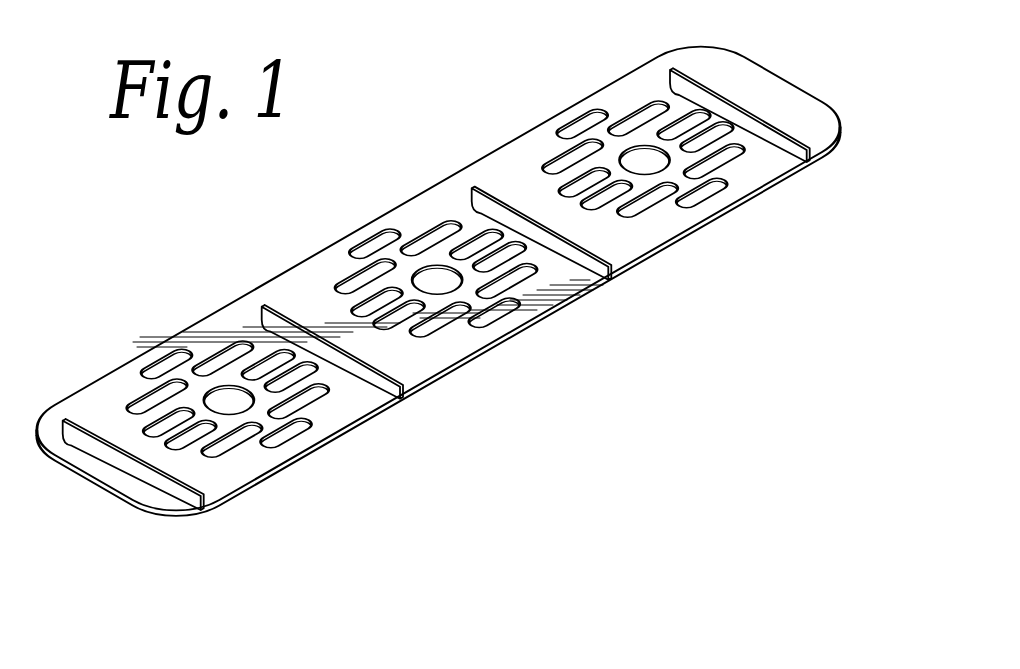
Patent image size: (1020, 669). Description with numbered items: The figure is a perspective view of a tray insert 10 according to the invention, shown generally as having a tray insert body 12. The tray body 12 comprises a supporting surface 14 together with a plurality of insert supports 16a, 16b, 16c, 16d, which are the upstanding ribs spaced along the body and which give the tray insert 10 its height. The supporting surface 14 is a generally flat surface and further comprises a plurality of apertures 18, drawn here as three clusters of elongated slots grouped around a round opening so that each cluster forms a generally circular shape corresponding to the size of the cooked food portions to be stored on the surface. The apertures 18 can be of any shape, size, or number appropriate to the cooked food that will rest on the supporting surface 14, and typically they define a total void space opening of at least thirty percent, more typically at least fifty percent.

The tray insert 10 is at (137, 250).
The tray insert body 12 is at (457, 172).
The supporting surface 14 is at (532, 194).
The insert support 16a is at (162, 488).
The insert support 16b is at (350, 368).
The insert support 16c is at (565, 248).
The insert support 16d is at (773, 140).
The apertures 18 is at (583, 127).